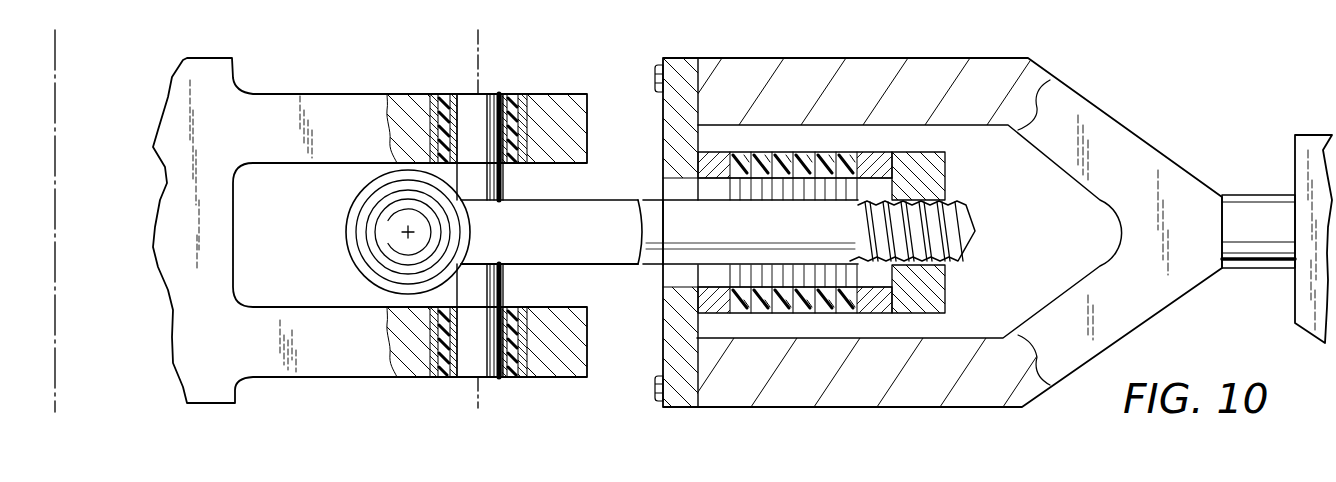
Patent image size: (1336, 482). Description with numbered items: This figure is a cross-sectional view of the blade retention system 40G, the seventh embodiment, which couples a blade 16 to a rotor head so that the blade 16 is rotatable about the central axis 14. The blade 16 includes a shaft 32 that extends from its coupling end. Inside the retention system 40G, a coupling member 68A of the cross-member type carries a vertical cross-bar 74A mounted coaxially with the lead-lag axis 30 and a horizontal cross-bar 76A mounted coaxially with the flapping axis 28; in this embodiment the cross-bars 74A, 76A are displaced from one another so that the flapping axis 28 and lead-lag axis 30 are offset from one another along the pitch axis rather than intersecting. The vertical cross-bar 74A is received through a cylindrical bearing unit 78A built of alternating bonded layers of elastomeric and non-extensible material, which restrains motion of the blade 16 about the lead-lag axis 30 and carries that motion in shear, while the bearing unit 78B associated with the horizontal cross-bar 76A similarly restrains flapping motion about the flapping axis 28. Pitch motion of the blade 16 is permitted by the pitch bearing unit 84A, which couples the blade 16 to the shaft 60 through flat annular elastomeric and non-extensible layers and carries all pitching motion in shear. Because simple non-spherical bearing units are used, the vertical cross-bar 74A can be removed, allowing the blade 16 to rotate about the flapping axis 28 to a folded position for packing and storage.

The central axis 14 is at (56, 306).
The lead-lag axis 30 is at (481, 52).
The vertical cross-bar 74A is at (470, 110).
The bearing unit 78A is at (523, 90).
The coupling member 68A is at (509, 185).
The shaft 60 is at (650, 197).
The bearing unit 78B is at (466, 232).
The flapping axis 28 is at (395, 229).
The horizontal cross-bar 76A is at (393, 244).
The pitch bearing unit 84A is at (869, 149).
The blade 16 is at (1307, 165).
The shaft 32 is at (1260, 273).
The blade retention system 40G is at (980, 425).